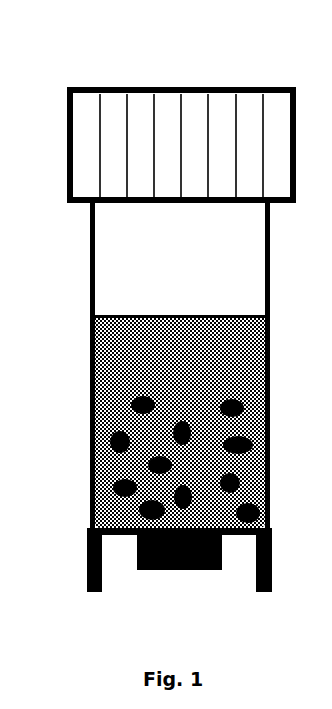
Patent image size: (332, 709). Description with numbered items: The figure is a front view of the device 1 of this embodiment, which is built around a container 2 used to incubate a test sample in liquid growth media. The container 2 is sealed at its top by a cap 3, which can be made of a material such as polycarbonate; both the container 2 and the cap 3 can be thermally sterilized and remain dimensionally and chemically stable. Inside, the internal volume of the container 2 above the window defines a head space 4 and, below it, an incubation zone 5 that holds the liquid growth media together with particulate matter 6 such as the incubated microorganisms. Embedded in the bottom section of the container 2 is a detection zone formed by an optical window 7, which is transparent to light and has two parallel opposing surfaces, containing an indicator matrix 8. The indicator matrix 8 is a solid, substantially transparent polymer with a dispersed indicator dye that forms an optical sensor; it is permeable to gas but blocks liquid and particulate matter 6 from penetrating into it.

The sample container assembly 1 is at (164, 311).
The container 2 is at (173, 397).
The cap 3 is at (67, 130).
The head space 4 is at (248, 253).
The incubation zone 5 is at (248, 360).
The particulate matter 6 is at (253, 443).
The optical window 7 is at (135, 545).
The indicator matrix 8 is at (222, 560).